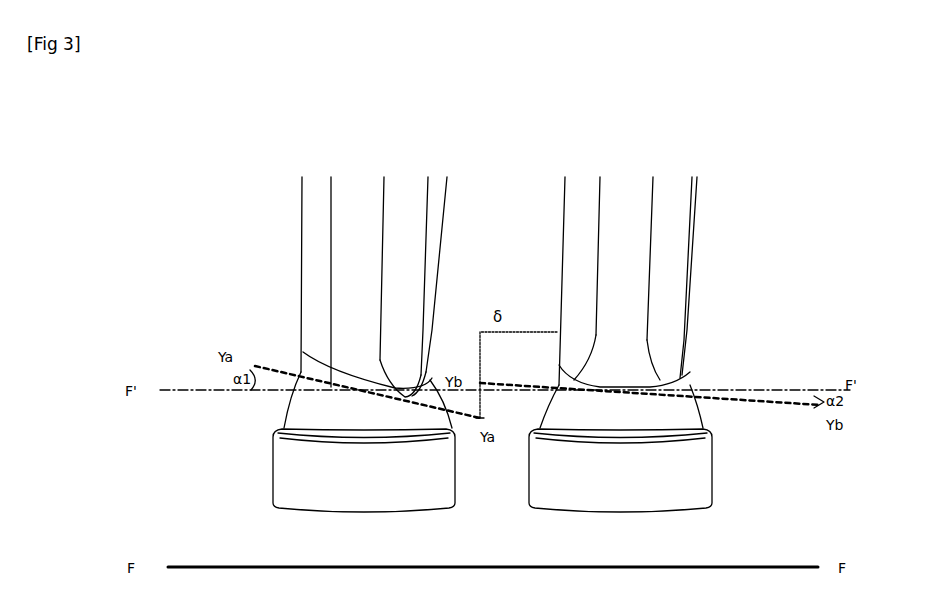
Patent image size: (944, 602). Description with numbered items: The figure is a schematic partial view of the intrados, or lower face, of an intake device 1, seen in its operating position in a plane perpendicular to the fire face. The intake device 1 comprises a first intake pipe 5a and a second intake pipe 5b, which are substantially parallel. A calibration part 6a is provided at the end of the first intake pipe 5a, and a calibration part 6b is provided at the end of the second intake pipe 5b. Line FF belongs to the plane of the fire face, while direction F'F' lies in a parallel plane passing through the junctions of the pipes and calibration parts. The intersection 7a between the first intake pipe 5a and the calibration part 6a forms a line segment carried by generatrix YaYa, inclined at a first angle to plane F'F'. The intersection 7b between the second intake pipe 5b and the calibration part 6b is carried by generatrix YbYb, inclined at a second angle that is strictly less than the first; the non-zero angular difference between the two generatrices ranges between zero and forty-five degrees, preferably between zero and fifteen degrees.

The intake device 1 is at (185, 138).
The first intake pipe 5a is at (348, 240).
The second intake pipe 5b is at (655, 262).
The calibration part 6a is at (332, 463).
The calibration part 6b is at (683, 464).
The intersection 7a is at (303, 372).
The intersection 7b is at (690, 380).